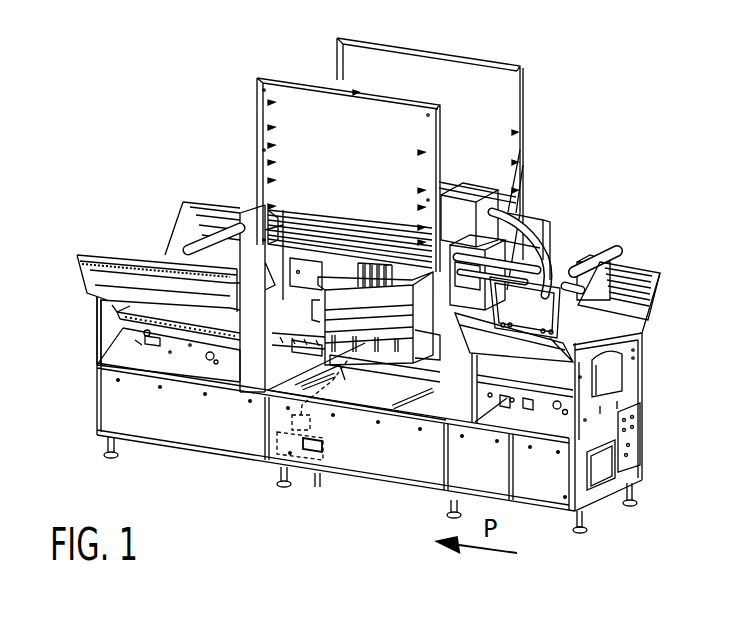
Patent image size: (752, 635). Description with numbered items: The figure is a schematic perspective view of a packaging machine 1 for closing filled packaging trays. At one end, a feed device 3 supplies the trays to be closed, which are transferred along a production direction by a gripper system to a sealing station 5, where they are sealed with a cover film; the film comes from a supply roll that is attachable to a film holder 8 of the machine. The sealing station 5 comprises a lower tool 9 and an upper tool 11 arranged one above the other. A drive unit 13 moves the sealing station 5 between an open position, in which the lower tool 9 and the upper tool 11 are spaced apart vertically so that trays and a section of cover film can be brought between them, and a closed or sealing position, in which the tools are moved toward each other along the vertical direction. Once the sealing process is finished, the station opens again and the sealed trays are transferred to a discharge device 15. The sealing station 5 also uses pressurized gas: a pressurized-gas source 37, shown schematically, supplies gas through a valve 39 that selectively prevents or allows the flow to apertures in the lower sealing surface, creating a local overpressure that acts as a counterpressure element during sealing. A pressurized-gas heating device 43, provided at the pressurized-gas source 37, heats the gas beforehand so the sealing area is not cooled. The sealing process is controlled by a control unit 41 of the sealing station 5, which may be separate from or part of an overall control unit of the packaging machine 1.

The packaging machine 1 is at (608, 70).
The feed device 3 is at (614, 370).
The sealing station 5 is at (378, 396).
The film holder 8 is at (597, 258).
The lower tool 9 is at (361, 371).
The upper tool 11 is at (332, 295).
The drive unit 13 is at (303, 262).
The discharge device 15 is at (112, 334).
The pressurized-gas source 37 is at (277, 448).
The valve 39 is at (292, 421).
The control unit 41 is at (556, 315).
The pressurized-gas heating device 43 is at (312, 455).